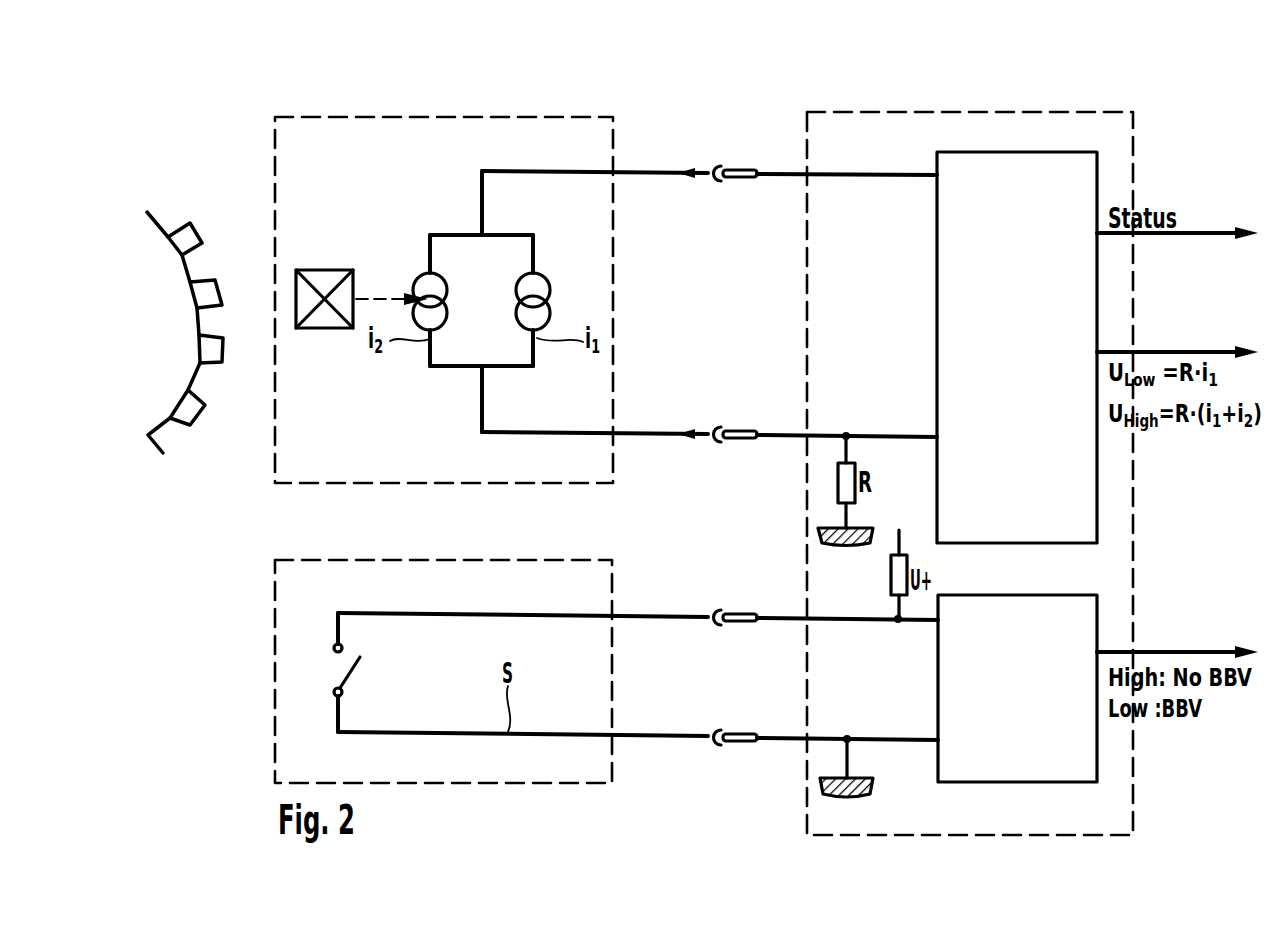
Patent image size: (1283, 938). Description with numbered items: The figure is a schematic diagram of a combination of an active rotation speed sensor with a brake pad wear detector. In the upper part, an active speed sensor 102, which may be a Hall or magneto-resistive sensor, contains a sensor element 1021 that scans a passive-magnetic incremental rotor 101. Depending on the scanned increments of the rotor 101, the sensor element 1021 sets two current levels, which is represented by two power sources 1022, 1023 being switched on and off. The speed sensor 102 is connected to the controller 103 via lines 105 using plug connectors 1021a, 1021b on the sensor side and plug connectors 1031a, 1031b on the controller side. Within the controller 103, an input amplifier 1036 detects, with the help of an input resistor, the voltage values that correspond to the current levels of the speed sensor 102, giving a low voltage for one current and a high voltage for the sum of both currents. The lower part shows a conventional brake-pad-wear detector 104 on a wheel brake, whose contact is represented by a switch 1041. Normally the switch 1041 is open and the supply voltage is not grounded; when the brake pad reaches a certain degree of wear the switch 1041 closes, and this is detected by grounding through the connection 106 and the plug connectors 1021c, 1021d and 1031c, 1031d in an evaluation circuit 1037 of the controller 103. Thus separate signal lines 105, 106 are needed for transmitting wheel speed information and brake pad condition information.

The incremental rotor 101 is at (198, 423).
The active speed sensor 102 is at (415, 115).
The controller 103 is at (965, 110).
The brake-pad-wear detector 104 is at (547, 785).
The lines 105 is at (643, 170).
The connection 106 is at (643, 620).
The sensor element 1021 is at (322, 270).
The power source 1022 is at (418, 275).
The power source 1023 is at (548, 275).
The plug connector 1021a is at (715, 167).
The plug connector 1021b is at (712, 441).
The plug connector 1021c is at (713, 612).
The plug connector 1021d is at (717, 745).
The plug connector 1031a is at (747, 180).
The plug connector 1031b is at (738, 430).
The plug connector 1031c is at (748, 623).
The plug connector 1031d is at (743, 733).
The input amplifier 1036 is at (950, 262).
The evaluation circuit 1037 is at (950, 677).
The switch 1041 is at (357, 668).